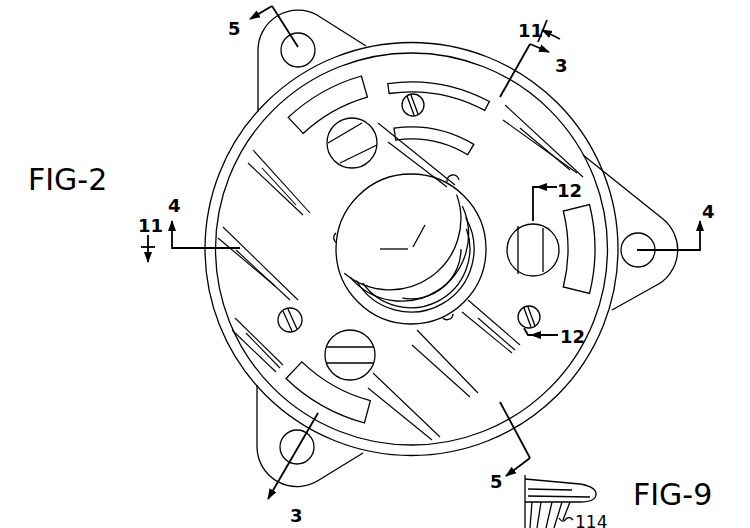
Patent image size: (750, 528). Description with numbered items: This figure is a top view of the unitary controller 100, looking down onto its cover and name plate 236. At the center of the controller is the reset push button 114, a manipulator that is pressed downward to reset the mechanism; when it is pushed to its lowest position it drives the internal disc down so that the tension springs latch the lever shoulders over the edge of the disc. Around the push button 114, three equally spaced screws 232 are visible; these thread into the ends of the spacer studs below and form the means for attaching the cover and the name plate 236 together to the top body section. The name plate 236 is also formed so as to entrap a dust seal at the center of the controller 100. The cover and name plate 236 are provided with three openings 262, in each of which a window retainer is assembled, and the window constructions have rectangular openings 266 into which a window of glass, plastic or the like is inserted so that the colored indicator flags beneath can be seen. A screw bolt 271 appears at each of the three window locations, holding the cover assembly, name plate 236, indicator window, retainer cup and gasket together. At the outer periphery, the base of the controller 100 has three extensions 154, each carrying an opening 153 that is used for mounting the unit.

The unitary controller 100 is at (217, 348).
The reset push button 114 is at (475, 223).
The openings 153 is at (284, 58).
The extensions 154 is at (345, 42).
The screws 232 is at (454, 181).
The name plate 236 is at (210, 297).
The openings 262 is at (352, 168).
The rectangular openings 266 is at (330, 150).
The screw bolts 271 is at (424, 110).